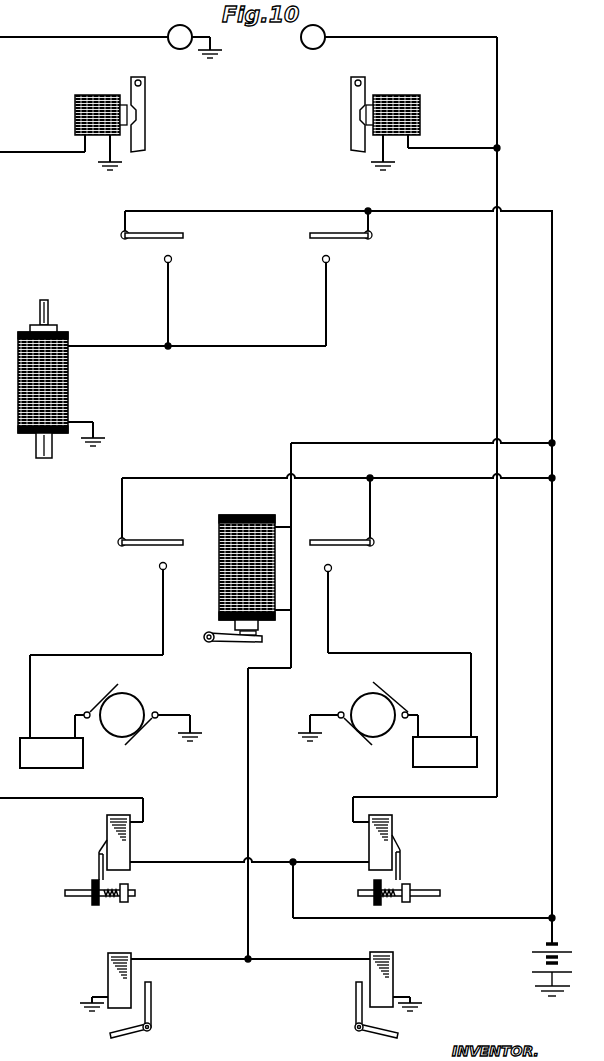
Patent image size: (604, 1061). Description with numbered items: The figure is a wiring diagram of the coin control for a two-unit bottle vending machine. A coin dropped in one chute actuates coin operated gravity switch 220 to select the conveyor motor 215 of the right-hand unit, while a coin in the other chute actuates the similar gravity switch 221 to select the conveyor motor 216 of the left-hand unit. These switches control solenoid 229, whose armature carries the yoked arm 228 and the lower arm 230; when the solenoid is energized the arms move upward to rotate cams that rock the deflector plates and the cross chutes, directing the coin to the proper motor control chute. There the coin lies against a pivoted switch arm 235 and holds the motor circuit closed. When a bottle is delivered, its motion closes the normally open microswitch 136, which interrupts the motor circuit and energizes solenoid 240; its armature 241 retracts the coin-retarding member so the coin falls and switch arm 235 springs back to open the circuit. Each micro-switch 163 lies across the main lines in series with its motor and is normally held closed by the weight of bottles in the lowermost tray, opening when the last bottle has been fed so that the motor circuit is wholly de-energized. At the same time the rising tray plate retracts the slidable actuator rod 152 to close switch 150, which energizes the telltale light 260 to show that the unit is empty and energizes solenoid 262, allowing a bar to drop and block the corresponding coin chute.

The telltale light 260 is at (182, 20).
The solenoid 262 is at (89, 95).
The coin operated gravity switch 221 is at (138, 240).
The coin operated gravity switch 220 is at (344, 240).
The yoked arm 228 is at (49, 315).
The solenoid 229 is at (70, 378).
The lower arm 230 is at (40, 461).
The pivoted switch arm 235 is at (349, 528).
The solenoid 240 is at (284, 573).
The armature 241 is at (219, 645).
The conveyor motor 216 is at (121, 714).
The conveyor motor 215 is at (373, 713).
The micro-switch 163 is at (248, 752).
The switch 150 is at (118, 851).
The slidable actuator rod 152 is at (132, 893).
The microswitch 136 is at (131, 1034).